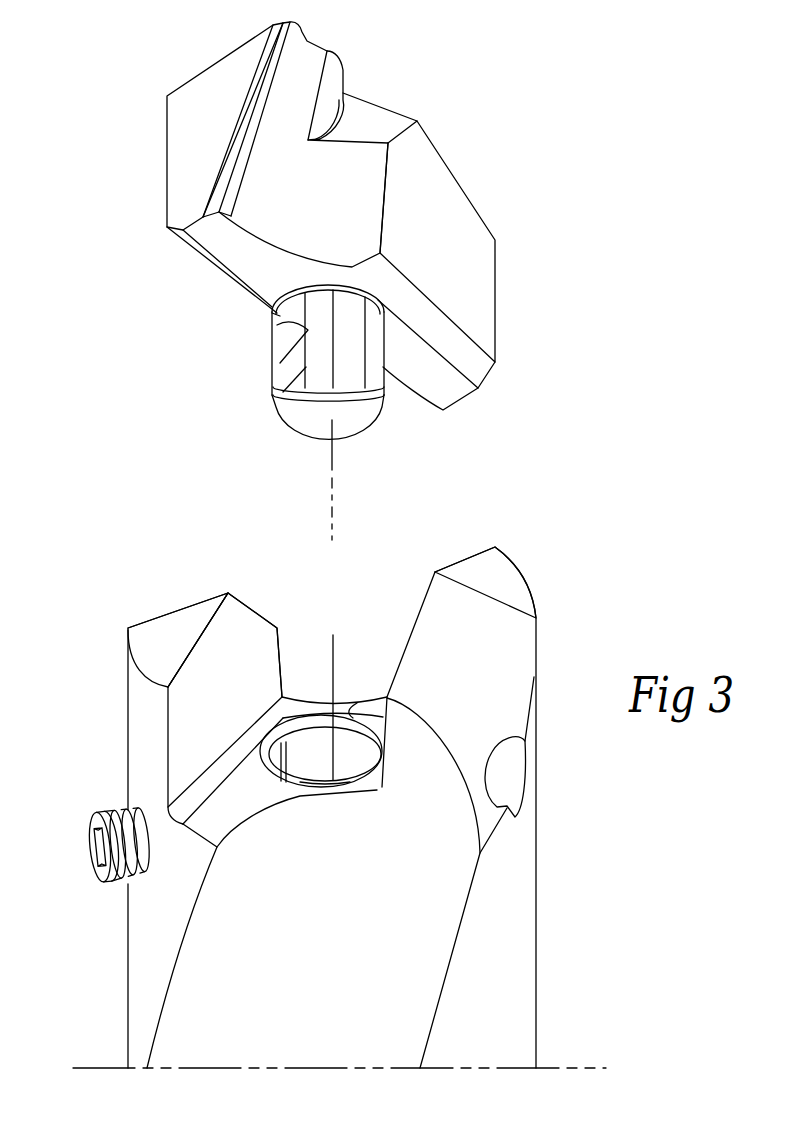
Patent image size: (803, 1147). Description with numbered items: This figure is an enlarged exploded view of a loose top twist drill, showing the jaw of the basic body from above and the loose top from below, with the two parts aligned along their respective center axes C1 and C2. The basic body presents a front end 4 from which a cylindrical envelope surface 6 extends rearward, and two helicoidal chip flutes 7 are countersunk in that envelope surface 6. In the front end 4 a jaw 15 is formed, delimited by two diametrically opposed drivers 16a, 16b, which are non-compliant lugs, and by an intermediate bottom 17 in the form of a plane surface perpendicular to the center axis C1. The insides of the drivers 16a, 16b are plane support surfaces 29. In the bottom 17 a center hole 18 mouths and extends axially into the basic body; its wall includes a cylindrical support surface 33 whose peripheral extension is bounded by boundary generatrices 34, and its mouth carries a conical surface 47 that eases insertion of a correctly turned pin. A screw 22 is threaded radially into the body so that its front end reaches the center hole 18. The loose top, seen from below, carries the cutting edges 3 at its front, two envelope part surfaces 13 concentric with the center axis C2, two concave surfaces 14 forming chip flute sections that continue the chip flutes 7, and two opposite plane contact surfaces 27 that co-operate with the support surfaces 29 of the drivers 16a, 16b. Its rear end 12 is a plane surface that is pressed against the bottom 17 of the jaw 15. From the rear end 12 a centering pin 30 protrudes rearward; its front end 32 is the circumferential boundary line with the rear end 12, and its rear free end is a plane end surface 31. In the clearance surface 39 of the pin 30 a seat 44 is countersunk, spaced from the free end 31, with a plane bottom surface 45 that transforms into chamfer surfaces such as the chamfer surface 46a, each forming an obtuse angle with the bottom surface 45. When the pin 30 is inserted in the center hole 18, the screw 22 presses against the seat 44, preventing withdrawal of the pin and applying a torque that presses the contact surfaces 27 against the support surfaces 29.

The cutting edges 3 is at (307, 42).
The envelope part surfaces 13 is at (181, 134).
The concave surfaces 14 is at (276, 190).
The contact surfaces 27 is at (427, 253).
The rear end 12 is at (235, 280).
The front end of centering pin 32 is at (321, 287).
The clearance surface 39 is at (278, 315).
The chamfer surface 46a is at (287, 336).
The seat 44 is at (268, 358).
The bottom surface 45 is at (287, 374).
The end surface 31 is at (354, 428).
The centering pin 30 is at (319, 352).
The center axis of loose top C2 is at (332, 470).
The driver 16a is at (173, 630).
The driver 16b is at (506, 588).
The jaw 15 is at (350, 632).
The conical surface 47 is at (355, 722).
The front end 4 is at (128, 723).
The plane surfaces 29 is at (207, 703).
The boundary generatrices 34 is at (290, 760).
The support surface 33 is at (339, 773).
The bottom 17 is at (227, 810).
The center hole 18 is at (308, 779).
The screw 22 is at (95, 857).
The chip flutes 7 is at (200, 995).
The envelope surface 6 is at (486, 991).
The center axis of basic body C1 is at (333, 648).